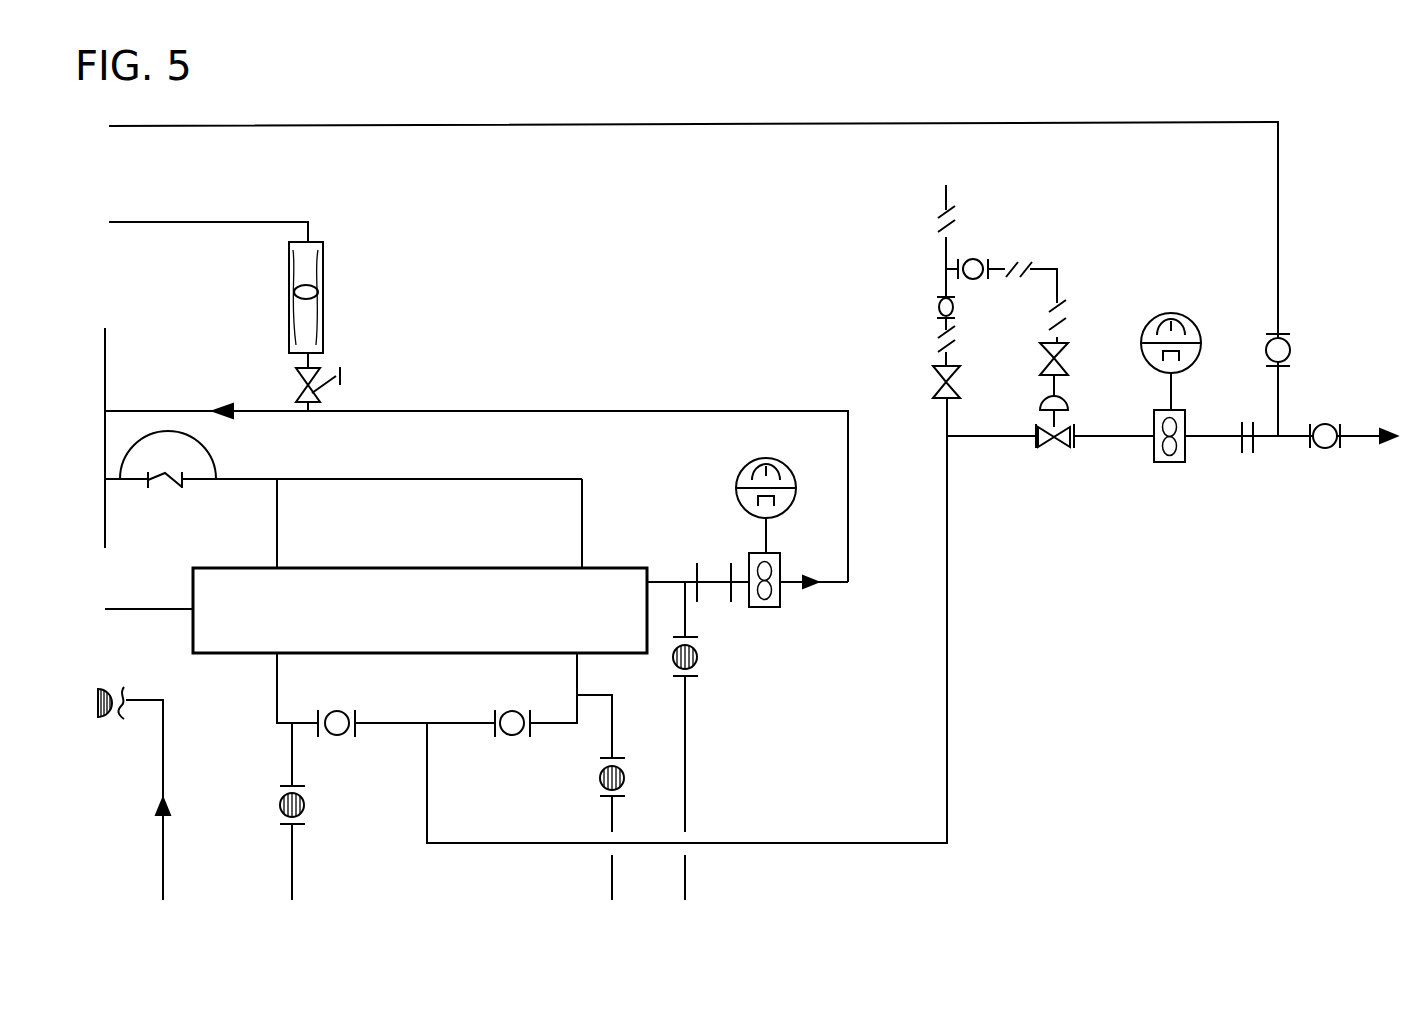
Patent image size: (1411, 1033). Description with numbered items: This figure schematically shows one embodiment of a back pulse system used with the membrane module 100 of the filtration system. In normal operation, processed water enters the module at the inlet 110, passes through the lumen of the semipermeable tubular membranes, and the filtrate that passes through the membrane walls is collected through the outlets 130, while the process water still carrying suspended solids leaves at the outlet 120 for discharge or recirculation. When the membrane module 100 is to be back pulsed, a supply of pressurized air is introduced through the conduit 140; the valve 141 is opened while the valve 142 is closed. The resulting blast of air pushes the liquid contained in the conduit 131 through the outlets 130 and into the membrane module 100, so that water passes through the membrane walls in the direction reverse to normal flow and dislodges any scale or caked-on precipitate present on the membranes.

The membrane module 100 is at (434, 623).
The inlet 110 is at (193, 609).
The outlet 120 is at (650, 582).
The outlets 130 is at (577, 660).
The conduit 131 is at (775, 843).
The conduit 140 is at (946, 200).
The valve 141 is at (935, 385).
The valve 142 is at (1050, 445).